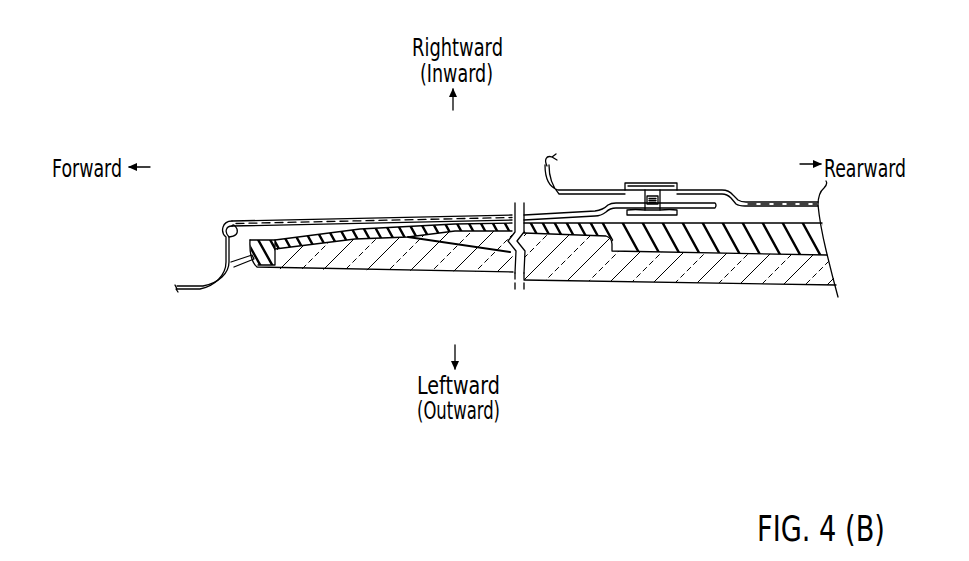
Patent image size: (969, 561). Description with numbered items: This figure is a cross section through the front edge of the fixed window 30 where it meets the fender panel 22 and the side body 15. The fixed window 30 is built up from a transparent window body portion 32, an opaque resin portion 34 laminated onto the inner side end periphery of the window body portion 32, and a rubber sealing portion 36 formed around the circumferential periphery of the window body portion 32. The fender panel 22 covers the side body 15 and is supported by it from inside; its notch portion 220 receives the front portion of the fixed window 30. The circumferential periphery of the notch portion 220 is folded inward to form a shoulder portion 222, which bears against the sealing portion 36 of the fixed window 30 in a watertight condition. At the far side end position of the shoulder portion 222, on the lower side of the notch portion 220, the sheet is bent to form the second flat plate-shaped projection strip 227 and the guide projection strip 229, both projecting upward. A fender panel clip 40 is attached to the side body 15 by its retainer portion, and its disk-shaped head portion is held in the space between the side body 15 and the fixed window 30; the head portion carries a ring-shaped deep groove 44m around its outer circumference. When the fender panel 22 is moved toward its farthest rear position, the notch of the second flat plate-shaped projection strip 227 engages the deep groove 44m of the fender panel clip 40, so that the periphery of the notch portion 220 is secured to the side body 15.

The side body 15 is at (717, 183).
The fender panel 22 is at (390, 196).
The notch portion 220 is at (345, 217).
The shoulder portion 222 is at (229, 221).
The second flat plate-shaped projection strip 227 is at (585, 189).
The guide projection strip 229 is at (458, 214).
The fixed window 30 is at (665, 290).
The window body portion 32 is at (735, 270).
The resin portion 34 is at (796, 250).
The sealing portion 36 is at (240, 264).
The fender panel clip 40 is at (658, 180).
The deep groove 44m is at (622, 189).